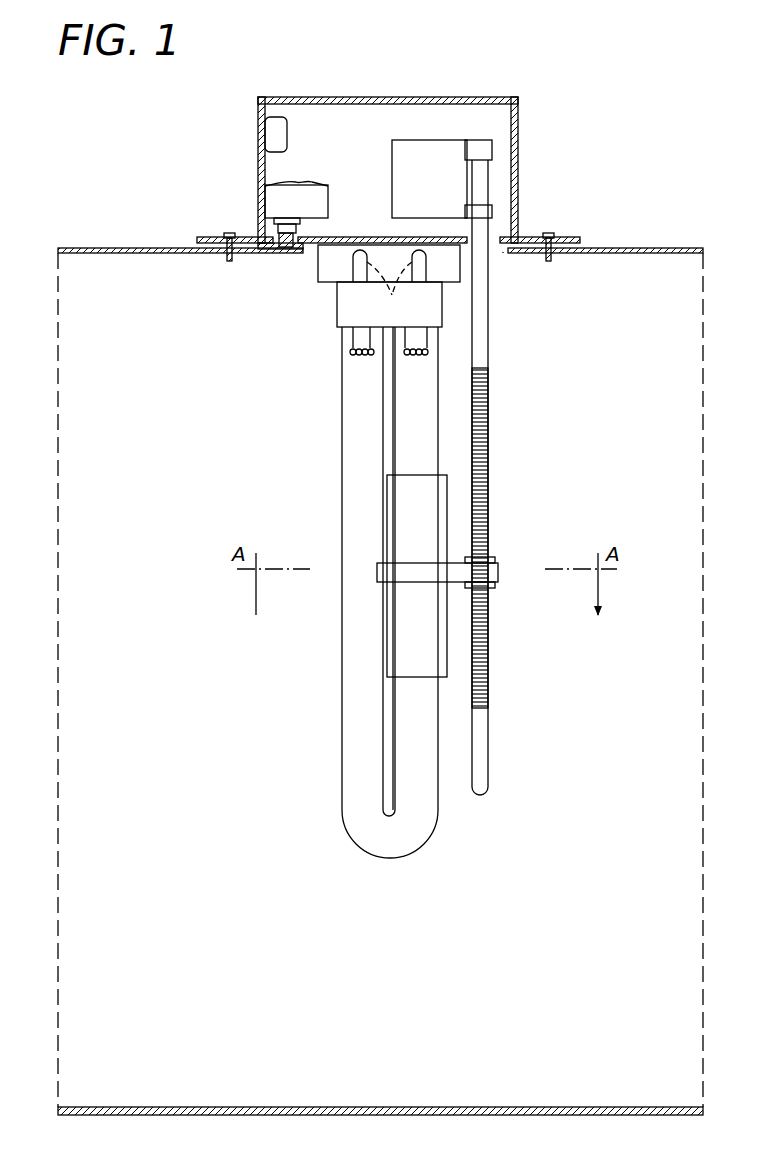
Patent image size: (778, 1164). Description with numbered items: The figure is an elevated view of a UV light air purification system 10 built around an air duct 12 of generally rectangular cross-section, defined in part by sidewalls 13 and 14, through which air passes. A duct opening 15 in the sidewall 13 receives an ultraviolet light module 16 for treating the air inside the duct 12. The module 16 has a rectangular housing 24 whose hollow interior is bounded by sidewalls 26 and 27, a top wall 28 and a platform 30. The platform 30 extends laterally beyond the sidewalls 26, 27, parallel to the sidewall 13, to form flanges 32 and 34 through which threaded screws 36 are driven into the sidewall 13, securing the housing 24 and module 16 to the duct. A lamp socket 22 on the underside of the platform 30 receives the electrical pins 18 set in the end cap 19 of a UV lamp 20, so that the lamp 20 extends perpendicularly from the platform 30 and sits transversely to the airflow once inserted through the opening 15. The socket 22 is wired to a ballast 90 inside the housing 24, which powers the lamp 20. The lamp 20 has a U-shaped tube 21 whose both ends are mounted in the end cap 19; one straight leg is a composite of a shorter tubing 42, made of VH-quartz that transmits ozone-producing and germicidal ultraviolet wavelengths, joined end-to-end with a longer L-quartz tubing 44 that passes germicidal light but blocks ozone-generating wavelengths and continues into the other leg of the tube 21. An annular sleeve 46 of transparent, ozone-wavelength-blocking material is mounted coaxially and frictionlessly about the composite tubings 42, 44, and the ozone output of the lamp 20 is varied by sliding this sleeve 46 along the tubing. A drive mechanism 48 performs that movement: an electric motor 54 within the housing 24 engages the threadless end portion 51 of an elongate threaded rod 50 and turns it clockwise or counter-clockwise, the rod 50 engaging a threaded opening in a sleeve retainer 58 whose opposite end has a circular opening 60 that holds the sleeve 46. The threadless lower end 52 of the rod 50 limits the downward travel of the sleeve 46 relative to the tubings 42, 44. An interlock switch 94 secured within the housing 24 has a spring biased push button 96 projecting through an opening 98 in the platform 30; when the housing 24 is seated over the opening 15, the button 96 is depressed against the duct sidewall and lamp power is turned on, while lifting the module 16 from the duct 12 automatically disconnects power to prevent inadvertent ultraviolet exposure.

The UV light air purification system 10 is at (110, 159).
The air duct 12 is at (133, 465).
The sidewall 13 is at (90, 248).
The sidewall 14 is at (180, 1107).
The duct opening 15 is at (500, 252).
The ultraviolet light module 16 is at (617, 130).
The electrical pins 18 is at (390, 306).
The end cap 19 is at (337, 305).
The UV lamp 20 is at (340, 455).
The U-shaped tube 21 is at (353, 813).
The lamp socket 22 is at (323, 265).
The housing 24 is at (381, 144).
The sidewall 26 is at (263, 182).
The sidewall 27 is at (518, 115).
The top wall 28 is at (365, 97).
The platform 30 is at (300, 240).
The flange 32 is at (200, 238).
The flange 34 is at (578, 240).
The threaded screws 36 is at (228, 233).
The tubing 42 is at (410, 418).
The tubing 44 is at (405, 650).
The annular sleeve 46 is at (450, 490).
The drive mechanism 48 is at (535, 467).
The threaded rod 50 is at (488, 420).
The threadless end portion 51 is at (480, 320).
The lower end 52 is at (483, 765).
The electric motor 54 is at (440, 140).
The sleeve retainer 58 is at (411, 573).
The circular opening 60 is at (462, 560).
The ballast 90 is at (275, 127).
The interlock switch 94 is at (305, 184).
The push button 96 is at (283, 253).
The opening 98 is at (298, 232).